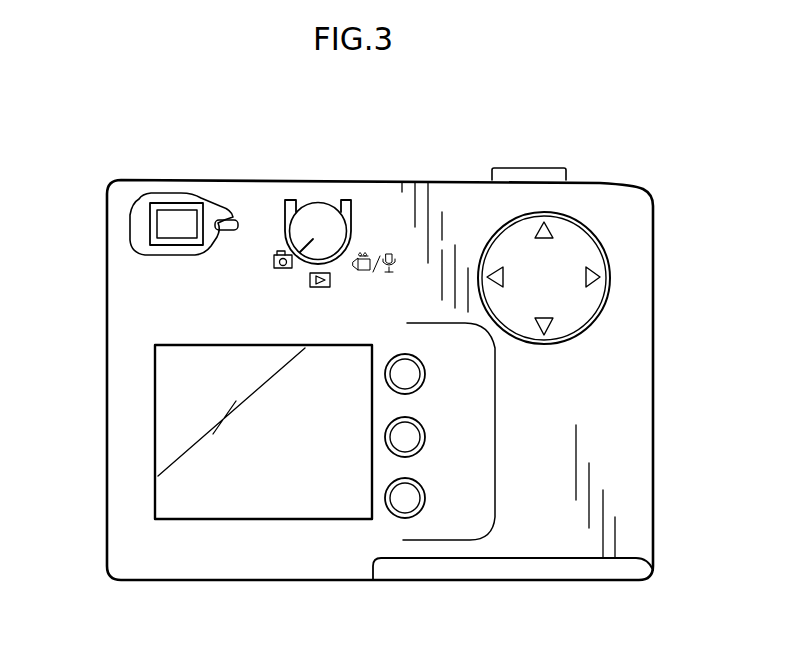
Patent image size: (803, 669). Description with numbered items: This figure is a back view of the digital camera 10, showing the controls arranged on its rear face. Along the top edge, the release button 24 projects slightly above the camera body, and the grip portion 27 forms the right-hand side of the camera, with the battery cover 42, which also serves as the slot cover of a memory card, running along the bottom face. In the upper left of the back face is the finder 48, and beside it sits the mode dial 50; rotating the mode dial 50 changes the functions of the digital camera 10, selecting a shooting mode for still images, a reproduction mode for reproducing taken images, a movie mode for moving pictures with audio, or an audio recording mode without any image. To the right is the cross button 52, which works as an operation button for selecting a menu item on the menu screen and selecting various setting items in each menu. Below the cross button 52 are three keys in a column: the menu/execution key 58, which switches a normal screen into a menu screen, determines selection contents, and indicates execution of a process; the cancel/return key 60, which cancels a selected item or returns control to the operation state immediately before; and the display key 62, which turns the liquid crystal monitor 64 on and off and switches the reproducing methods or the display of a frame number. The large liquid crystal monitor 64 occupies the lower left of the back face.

The digital camera 10 is at (372, 180).
The release button 24 is at (538, 175).
The grip portion 27 is at (630, 495).
The battery cover 42 is at (497, 570).
The finder 48 is at (177, 222).
The mode dial 50 is at (312, 217).
The cross button 52 is at (580, 257).
The menu/execution key 58 is at (410, 364).
The cancel/return key 60 is at (410, 428).
The display key 62 is at (403, 505).
The liquid crystal monitor 64 is at (178, 426).